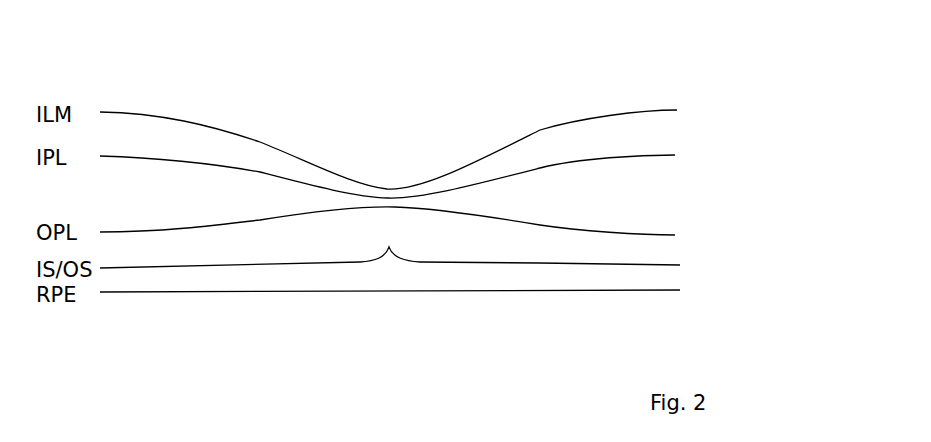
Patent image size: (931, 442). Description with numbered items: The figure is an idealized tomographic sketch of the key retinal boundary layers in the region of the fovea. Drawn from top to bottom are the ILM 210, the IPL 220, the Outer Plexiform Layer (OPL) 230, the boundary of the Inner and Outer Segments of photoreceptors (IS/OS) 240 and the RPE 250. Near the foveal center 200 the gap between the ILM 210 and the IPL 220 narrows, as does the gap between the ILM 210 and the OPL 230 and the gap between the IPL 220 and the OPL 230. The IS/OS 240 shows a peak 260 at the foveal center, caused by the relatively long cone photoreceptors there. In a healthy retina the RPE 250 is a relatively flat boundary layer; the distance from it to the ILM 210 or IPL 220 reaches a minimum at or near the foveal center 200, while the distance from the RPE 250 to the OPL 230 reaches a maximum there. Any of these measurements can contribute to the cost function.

The foveal center 200 is at (387, 185).
The ILM 210 is at (682, 100).
The IPL 220 is at (672, 148).
The Outer Plexiform Layer (OPL) 230 is at (668, 228).
The boundary of the Inner and Outer Segments of photoreceptors (IS/OS) 240 is at (678, 262).
The RPE 250 is at (680, 287).
The peak 260 is at (390, 258).